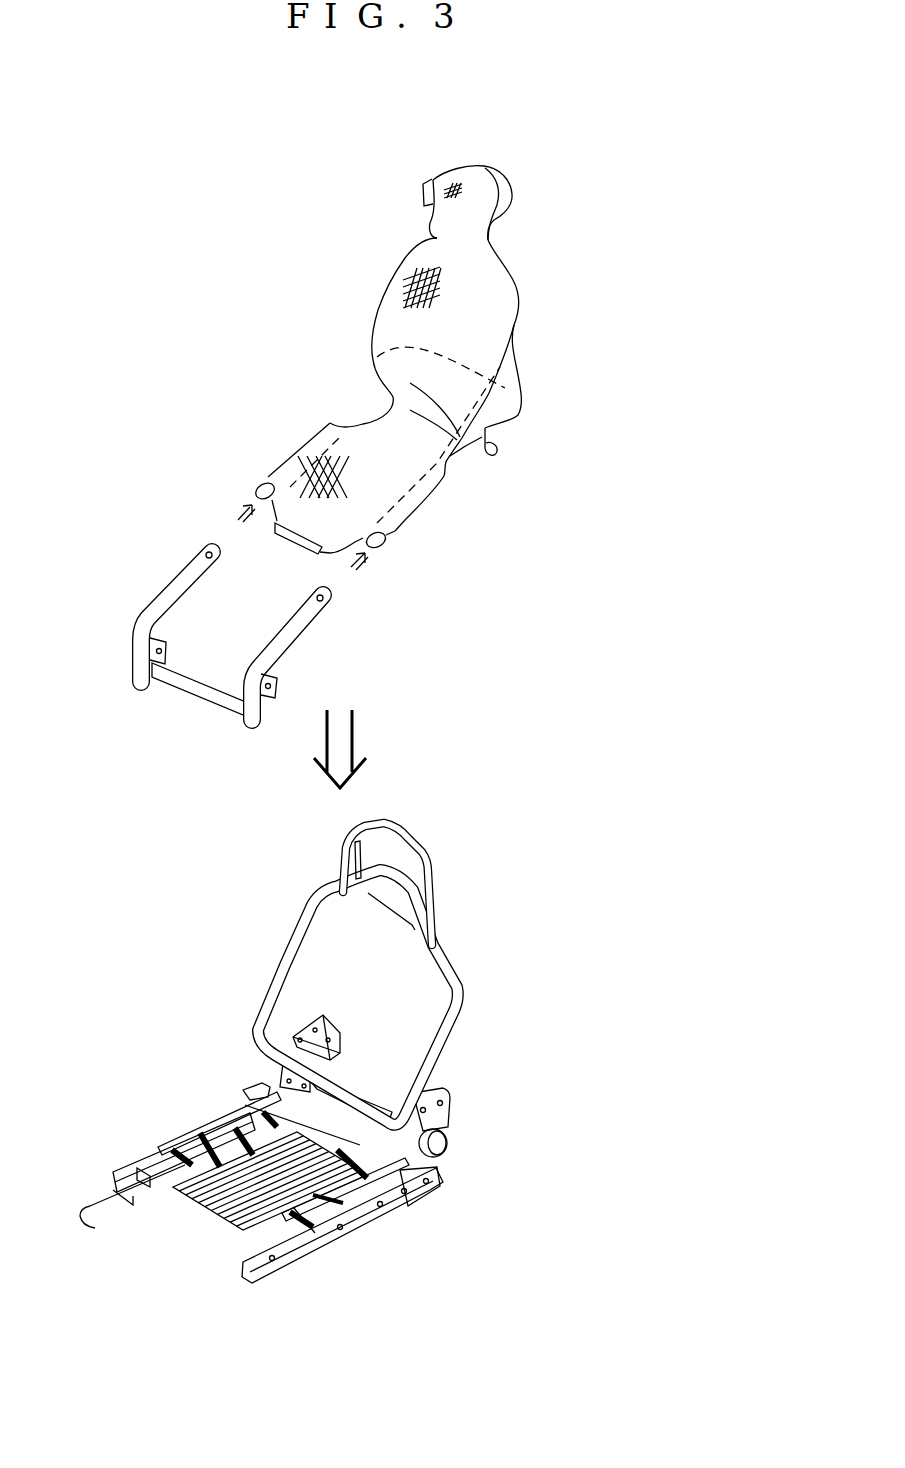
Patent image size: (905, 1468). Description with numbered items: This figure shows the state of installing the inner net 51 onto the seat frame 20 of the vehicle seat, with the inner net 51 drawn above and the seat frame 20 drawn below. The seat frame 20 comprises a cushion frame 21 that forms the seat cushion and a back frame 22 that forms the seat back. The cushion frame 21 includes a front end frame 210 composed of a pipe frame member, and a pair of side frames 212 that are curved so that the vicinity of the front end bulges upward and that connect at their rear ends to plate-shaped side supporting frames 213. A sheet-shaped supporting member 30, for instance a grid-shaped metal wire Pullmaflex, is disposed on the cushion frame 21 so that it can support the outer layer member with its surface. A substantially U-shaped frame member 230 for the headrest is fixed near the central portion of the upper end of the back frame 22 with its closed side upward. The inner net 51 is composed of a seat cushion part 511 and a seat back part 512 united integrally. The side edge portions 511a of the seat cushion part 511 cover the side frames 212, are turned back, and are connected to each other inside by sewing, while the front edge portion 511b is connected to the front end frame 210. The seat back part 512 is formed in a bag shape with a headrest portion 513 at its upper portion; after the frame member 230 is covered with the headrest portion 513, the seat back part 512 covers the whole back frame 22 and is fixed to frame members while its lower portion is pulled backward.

The inner net 51 is at (420, 359).
The seat cushion part 511 is at (354, 480).
The side edge portion 511a is at (263, 477).
The front edge portion 511b is at (287, 540).
The seat back part 512 is at (397, 318).
The headrest portion 513 is at (490, 168).
The seat frame 20 is at (303, 1045).
The cushion frame 21 is at (250, 1183).
The back frame 22 is at (326, 962).
The sheet-shaped supporting member 30 is at (205, 1207).
The front end frame 210 is at (215, 635).
The side frame 212 is at (157, 603).
The side supporting frame 213 is at (130, 1165).
The frame member for a headrest 230 is at (405, 836).